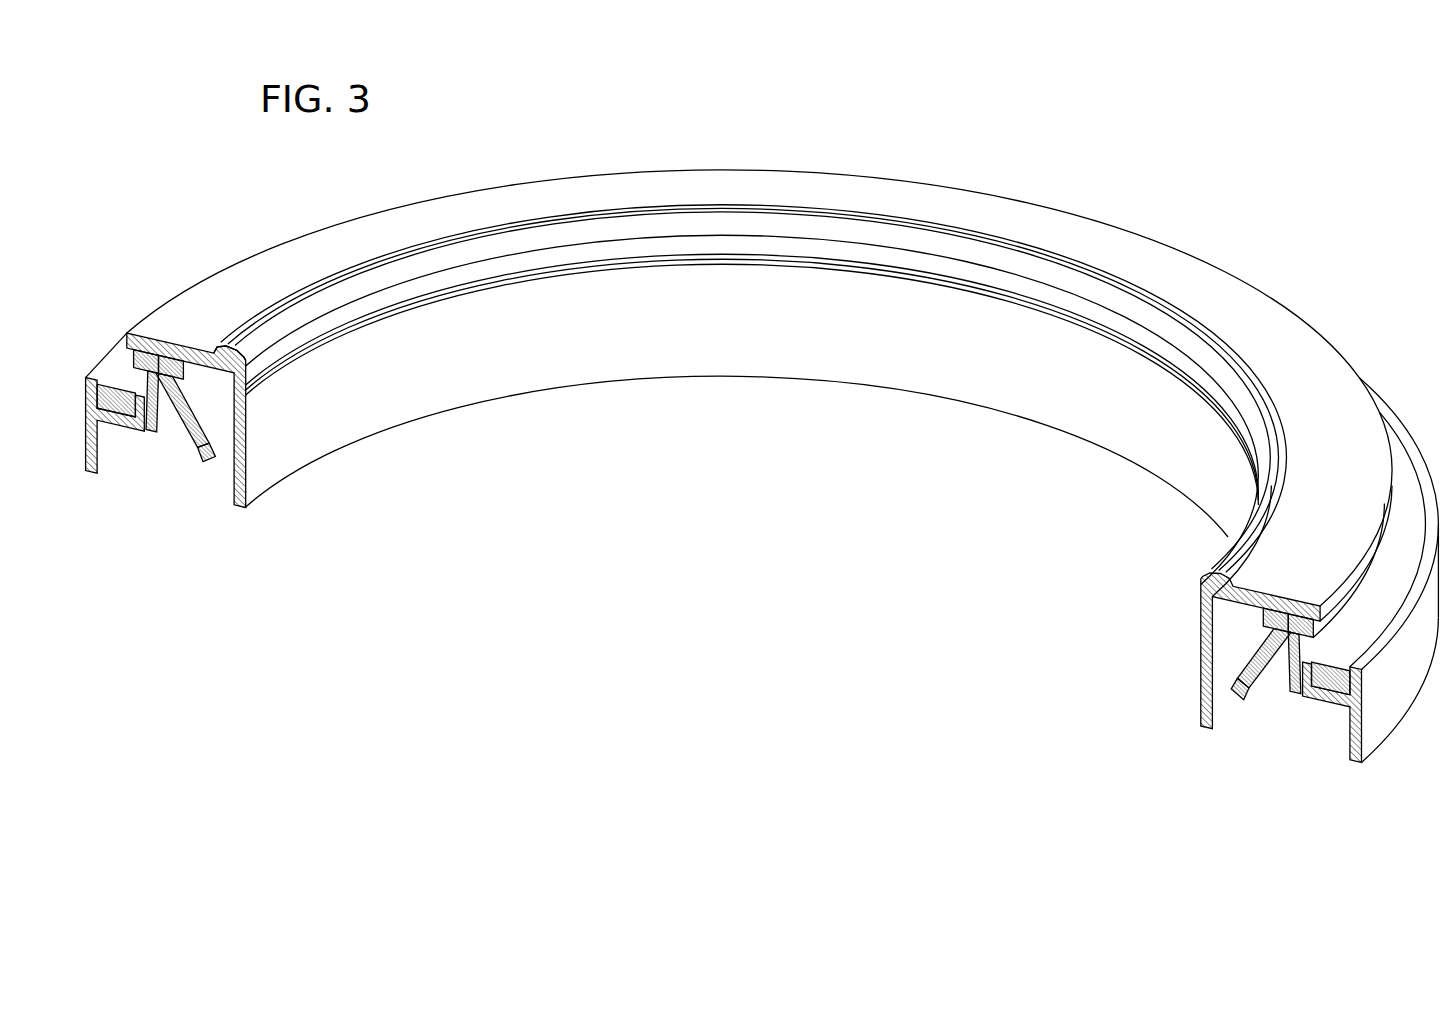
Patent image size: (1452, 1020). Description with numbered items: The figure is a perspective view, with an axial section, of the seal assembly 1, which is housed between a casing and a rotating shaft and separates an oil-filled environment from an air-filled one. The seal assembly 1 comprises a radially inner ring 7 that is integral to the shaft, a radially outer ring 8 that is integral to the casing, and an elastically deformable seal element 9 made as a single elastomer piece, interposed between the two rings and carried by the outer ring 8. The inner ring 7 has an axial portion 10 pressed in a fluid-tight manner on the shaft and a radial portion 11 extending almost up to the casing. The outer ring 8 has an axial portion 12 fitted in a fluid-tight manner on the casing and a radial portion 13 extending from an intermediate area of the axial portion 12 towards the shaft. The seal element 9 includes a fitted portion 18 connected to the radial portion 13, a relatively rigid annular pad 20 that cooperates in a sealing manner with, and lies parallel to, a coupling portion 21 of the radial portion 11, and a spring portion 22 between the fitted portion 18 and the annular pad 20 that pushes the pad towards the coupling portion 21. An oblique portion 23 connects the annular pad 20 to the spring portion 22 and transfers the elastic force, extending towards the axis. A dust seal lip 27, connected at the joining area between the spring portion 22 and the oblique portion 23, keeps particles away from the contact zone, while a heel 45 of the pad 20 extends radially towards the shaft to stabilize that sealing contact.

The seal assembly 1 is at (1304, 165).
The radially inner ring 7 is at (765, 360).
The radially outer ring 8 is at (1392, 696).
The seal element 9 is at (1270, 688).
The axial portion 10 is at (240, 478).
The radial portion 11 is at (182, 330).
The axial portion 12 is at (85, 447).
The radial portion 13 is at (110, 420).
The fitted portion 18 is at (143, 450).
The annular pad 20 is at (143, 373).
The coupling portion 21 is at (182, 371).
The spring portion 22 is at (170, 428).
The oblique portion 23 is at (222, 348).
The dust seal lip 27 is at (213, 452).
The heel 45 is at (1300, 600).